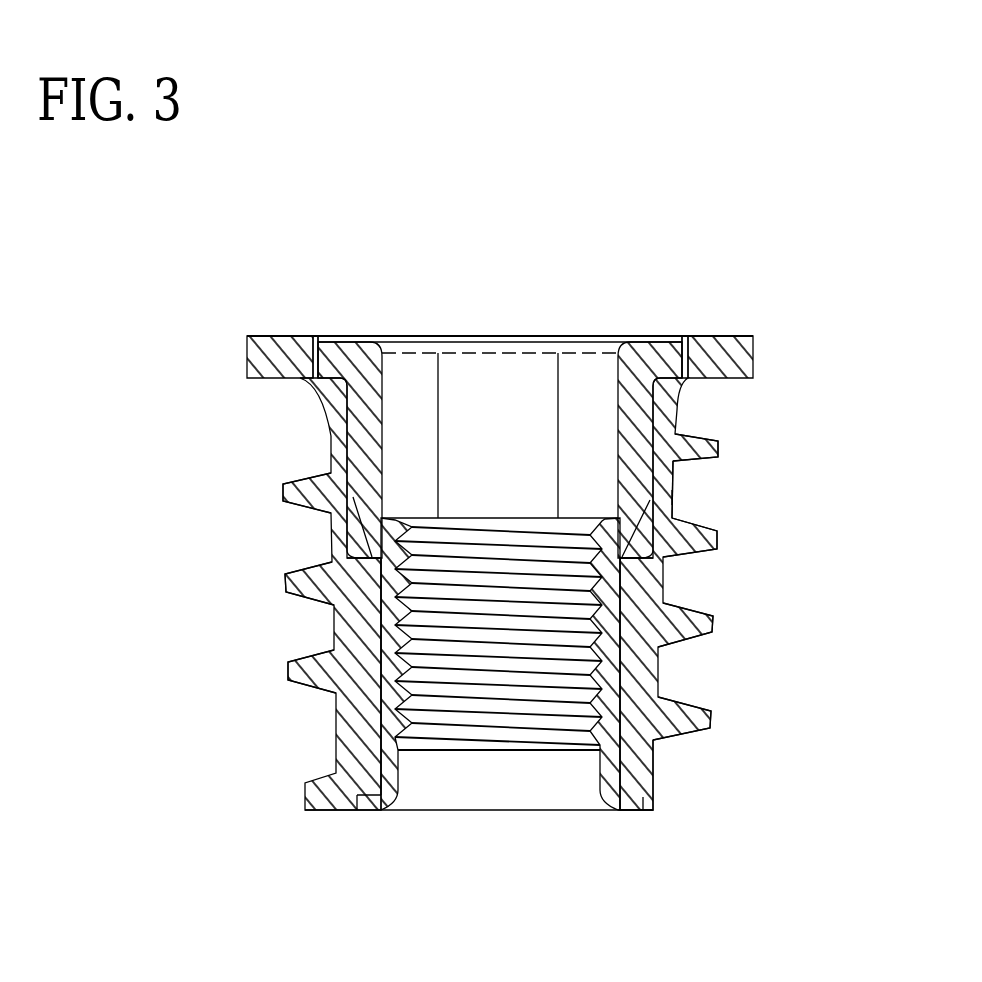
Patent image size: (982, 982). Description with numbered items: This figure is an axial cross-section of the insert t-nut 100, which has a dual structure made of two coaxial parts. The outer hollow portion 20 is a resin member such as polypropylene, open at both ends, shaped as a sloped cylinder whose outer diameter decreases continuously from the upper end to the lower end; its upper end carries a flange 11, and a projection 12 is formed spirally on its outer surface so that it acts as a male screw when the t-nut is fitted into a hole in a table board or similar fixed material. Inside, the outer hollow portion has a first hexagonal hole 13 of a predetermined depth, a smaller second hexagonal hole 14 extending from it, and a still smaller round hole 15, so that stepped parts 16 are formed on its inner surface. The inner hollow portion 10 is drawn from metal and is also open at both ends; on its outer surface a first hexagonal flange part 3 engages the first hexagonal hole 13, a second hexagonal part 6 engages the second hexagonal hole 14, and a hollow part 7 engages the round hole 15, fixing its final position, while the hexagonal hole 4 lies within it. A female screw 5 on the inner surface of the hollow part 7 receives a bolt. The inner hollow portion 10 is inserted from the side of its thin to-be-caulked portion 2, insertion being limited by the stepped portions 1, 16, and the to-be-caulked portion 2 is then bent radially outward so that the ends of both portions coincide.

The t-nut 100 is at (531, 126).
The stepped portion 1 is at (325, 595).
The to-be-caulked portion 2 is at (388, 800).
The first hexagonal flange part 3 is at (334, 362).
The hexagonal hole 4 is at (486, 385).
The female screw 5 is at (500, 700).
The second hexagonal part 6 is at (688, 463).
The hollow part 7 is at (613, 722).
The inner hollow portion 10 is at (345, 438).
The flange 11 is at (723, 337).
The projection 12 is at (713, 620).
The first hexagonal hole 13 is at (668, 376).
The second hexagonal hole 14 is at (688, 433).
The round hole 15 is at (620, 665).
The stepped parts 16 is at (334, 539).
The outer hollow portion 20 is at (674, 497).